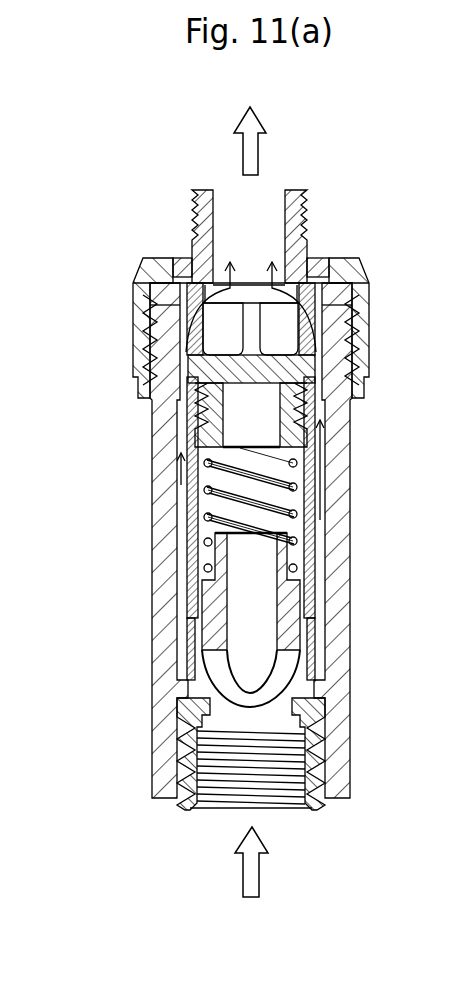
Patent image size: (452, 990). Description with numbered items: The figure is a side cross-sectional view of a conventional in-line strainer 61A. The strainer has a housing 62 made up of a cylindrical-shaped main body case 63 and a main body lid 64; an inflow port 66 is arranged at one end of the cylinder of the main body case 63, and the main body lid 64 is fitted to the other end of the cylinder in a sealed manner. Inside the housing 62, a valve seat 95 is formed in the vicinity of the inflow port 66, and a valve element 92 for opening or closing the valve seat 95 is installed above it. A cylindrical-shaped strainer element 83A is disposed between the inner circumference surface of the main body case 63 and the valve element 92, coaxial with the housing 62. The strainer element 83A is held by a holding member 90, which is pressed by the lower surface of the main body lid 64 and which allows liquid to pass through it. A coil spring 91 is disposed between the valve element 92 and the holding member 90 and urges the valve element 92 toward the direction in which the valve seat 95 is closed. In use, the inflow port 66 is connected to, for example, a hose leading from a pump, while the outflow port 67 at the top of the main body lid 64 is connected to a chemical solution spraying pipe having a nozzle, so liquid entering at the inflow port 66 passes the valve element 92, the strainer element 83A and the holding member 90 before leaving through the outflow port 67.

The in-line strainer 61A is at (127, 192).
The housing 62 is at (56, 332).
The main body case 63 is at (150, 460).
The main body lid 64 is at (132, 333).
The inflow port 66 is at (278, 815).
The outflow port 67 is at (273, 197).
The strainer element 83A is at (310, 565).
The holding member 90 is at (310, 402).
The coil spring 91 is at (297, 527).
The valve element 92 is at (290, 620).
The valve seat 95 is at (293, 672).